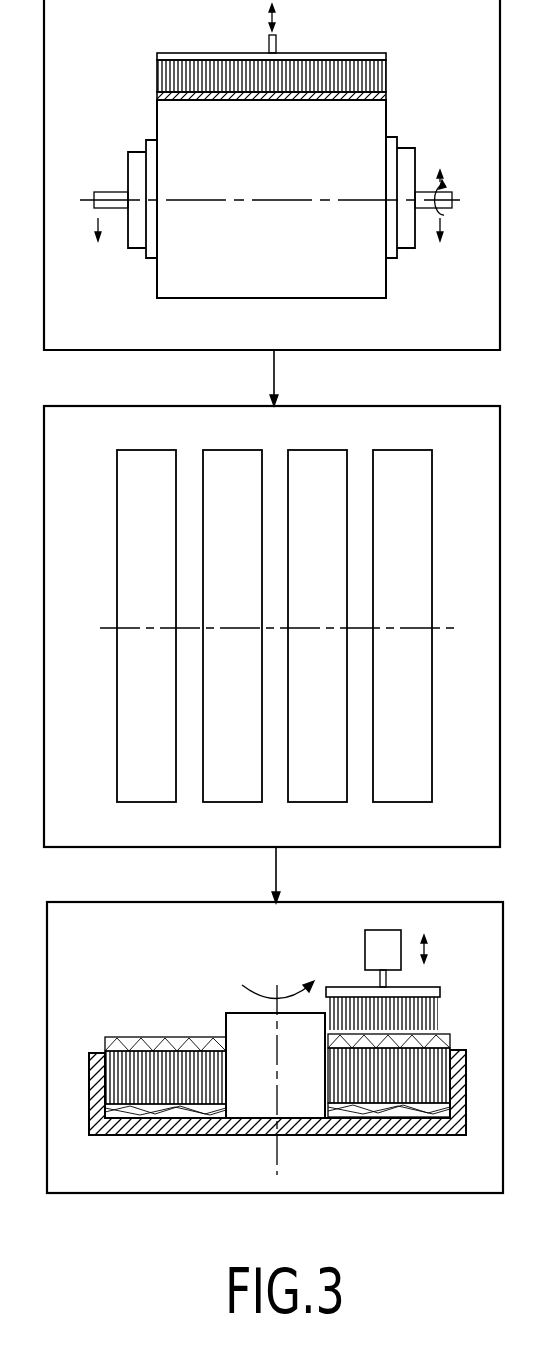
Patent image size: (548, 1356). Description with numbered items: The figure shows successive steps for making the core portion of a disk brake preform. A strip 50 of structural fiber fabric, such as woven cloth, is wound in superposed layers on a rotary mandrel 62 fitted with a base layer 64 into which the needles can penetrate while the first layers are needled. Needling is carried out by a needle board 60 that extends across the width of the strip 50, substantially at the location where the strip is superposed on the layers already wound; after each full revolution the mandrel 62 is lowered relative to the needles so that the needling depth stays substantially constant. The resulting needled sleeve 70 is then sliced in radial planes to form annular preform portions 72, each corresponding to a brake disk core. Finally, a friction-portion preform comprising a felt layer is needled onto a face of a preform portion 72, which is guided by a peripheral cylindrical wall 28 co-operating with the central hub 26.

The needle board 60 is at (386, 54).
The strip of fiber fabric 50 is at (386, 97).
The needled sleeve 70 is at (280, 298).
The base layer 64 is at (152, 262).
The mandrel 62 is at (405, 247).
The annular preform portion 72 is at (215, 510).
The central hub 26 is at (234, 1013).
The peripheral cylindrical wall 28 is at (88, 1073).